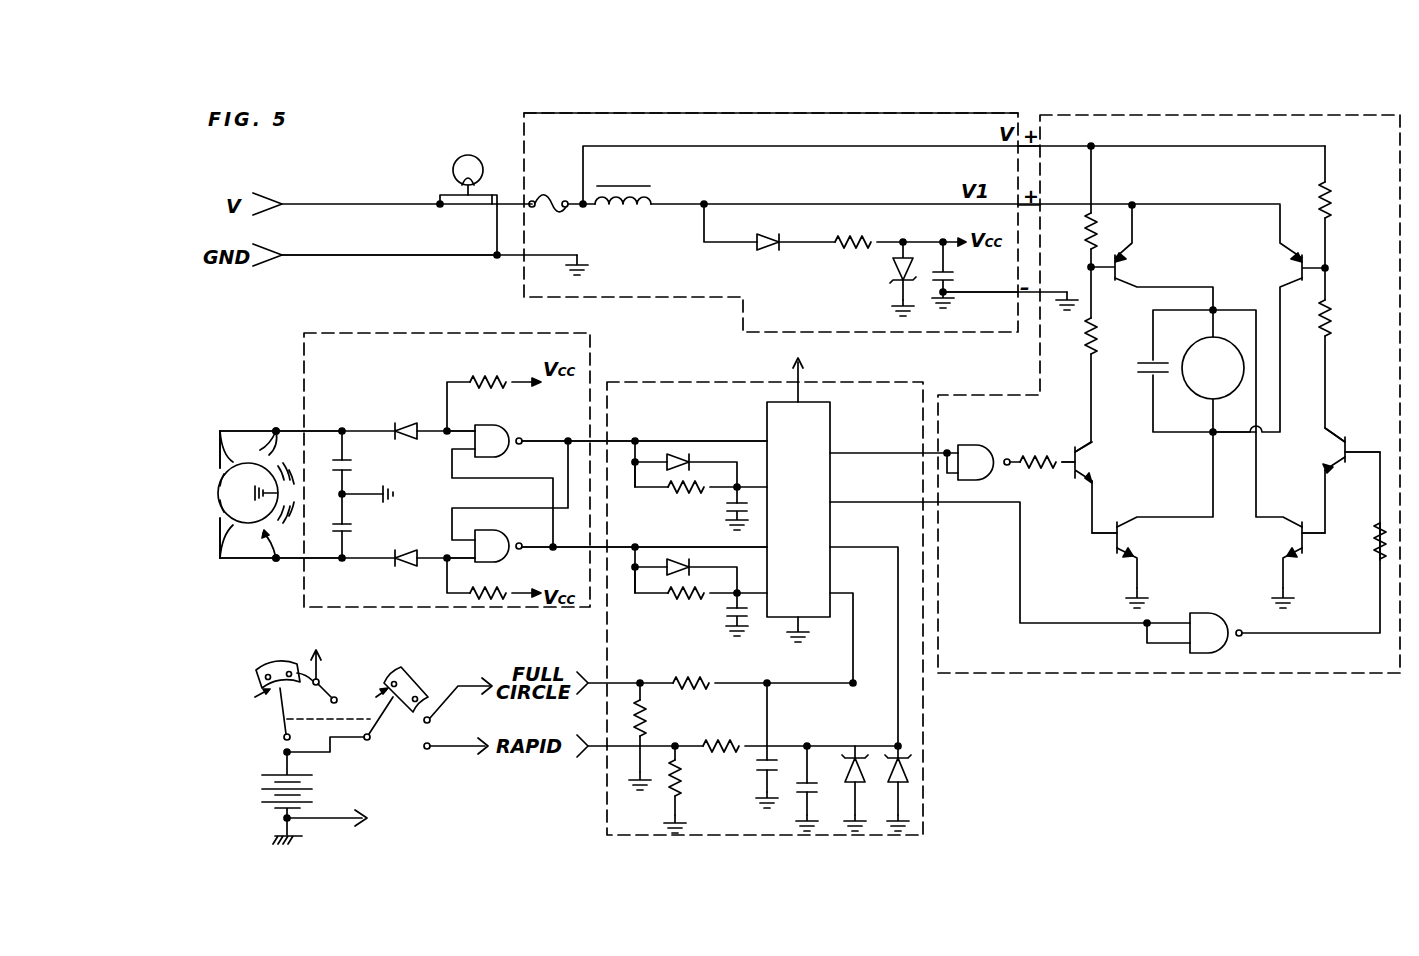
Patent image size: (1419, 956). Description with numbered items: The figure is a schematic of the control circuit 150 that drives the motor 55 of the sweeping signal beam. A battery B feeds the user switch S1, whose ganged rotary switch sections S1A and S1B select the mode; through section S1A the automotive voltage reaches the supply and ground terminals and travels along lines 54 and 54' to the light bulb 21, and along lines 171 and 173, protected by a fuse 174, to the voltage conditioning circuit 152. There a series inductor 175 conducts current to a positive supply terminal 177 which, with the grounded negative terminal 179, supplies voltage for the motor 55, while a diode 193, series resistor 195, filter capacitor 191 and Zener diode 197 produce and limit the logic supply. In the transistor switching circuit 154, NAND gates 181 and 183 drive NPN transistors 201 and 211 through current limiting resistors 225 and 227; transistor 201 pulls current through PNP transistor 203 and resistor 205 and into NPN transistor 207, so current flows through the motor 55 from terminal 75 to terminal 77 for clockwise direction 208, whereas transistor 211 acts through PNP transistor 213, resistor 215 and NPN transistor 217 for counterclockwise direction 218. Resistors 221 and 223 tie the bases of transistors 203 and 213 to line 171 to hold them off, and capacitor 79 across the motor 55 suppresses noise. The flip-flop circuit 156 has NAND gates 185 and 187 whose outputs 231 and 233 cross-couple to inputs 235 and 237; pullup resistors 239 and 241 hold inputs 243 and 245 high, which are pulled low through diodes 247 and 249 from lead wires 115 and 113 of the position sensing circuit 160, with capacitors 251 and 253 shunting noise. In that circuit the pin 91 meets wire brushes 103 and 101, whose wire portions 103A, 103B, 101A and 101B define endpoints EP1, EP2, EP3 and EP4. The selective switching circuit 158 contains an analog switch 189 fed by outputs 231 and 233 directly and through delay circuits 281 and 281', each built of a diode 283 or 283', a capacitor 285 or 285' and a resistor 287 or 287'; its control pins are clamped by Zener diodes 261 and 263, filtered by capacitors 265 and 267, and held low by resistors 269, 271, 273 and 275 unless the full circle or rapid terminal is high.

The light bulb 21 is at (469, 155).
The line 54 is at (436, 184).
The line 54' is at (494, 169).
The line 173 is at (501, 258).
The fuse 174 is at (560, 210).
The line 171 is at (533, 208).
The series inductor 175 is at (655, 200).
The voltage conditioning circuit 152 is at (770, 113).
The control circuit 150 is at (962, 105).
The transistor switching circuit 154 is at (1115, 116).
The positive supply voltage terminal 177 is at (1018, 200).
The negative supply voltage terminal 179 is at (1008, 294).
The diode 193 is at (770, 252).
The series resistor 195 is at (852, 250).
The Zener diode 197 is at (888, 272).
The filter capacitor 191 is at (952, 271).
The resistor 221 is at (1085, 240).
The resistor 205 is at (1100, 331).
The resistor 223 is at (1332, 208).
The resistor 215 is at (1332, 320).
The PNP transistor 203 is at (1128, 273).
The PNP transistor 213 is at (1300, 269).
The motor 55 is at (1186, 354).
The motor terminal 75 is at (1215, 334).
The motor terminal 77 is at (1216, 430).
The capacitor 79 is at (1146, 364).
The NPN transistor 211 is at (1346, 436).
The current limiting resistor 227 is at (1375, 556).
The NPN transistor 217 is at (1298, 537).
The NPN transistor 207 is at (1122, 537).
The NPN transistor 201 is at (1080, 464).
The current limiting resistor 225 is at (1040, 458).
The NAND gate 181 is at (995, 428).
The NAND gate 183 is at (1233, 615).
The analog switch 189 is at (832, 444).
The selective switching circuit 158 is at (640, 381).
The flip-flop circuit 156 is at (475, 334).
The diode 283 is at (673, 433).
The resistor 287 is at (660, 495).
The delay circuit 281 is at (638, 500).
The capacitor 285 is at (707, 518).
The diode 283' is at (707, 570).
The resistor 287' is at (660, 601).
The capacitor 285' is at (705, 626).
The delay circuit 281' is at (663, 616).
The NAND gate 185 is at (492, 425).
The NAND gate 187 is at (524, 525).
The input 237 is at (452, 455).
The input 235 is at (452, 532).
The pullup resistor 239 is at (495, 378).
The pullup resistor 241 is at (492, 599).
The input 243 is at (463, 430).
The input 245 is at (460, 563).
The output 231 is at (544, 440).
The output 233 is at (553, 550).
The diode 247 is at (395, 423).
The diode 249 is at (412, 567).
The capacitor 251 is at (346, 462).
The capacitor 253 is at (350, 531).
The lead wire 115 is at (343, 424).
The lead wire 113 is at (316, 561).
The wire portion 103A is at (279, 432).
The wire portion 101A is at (277, 562).
The pin 91 is at (266, 458).
The wire brush 103 is at (252, 446).
The wire portion 103B is at (228, 463).
The wire brush 101 is at (241, 526).
The wire portion 101B is at (241, 541).
The endpoint EP1 is at (276, 477).
The endpoint EP2 is at (277, 511).
The endpoint EP3 is at (230, 518).
The endpoint EP4 is at (224, 469).
The clockwise direction 208 is at (292, 478).
The counterclockwise direction 218 is at (292, 508).
The position sensing circuit 160 is at (243, 382).
The rotary switch section S1A is at (284, 738).
The rotary switch section S1B is at (372, 742).
The user switch S1 is at (376, 787).
The battery B is at (312, 791).
The resistor 273 is at (700, 681).
The resistor 275 is at (650, 717).
The resistor 269 is at (712, 744).
The resistor 271 is at (685, 792).
The capacitor 267 is at (774, 755).
The capacitor 265 is at (805, 790).
The Zener diode 261 is at (906, 767).
The Zener diode 263 is at (868, 770).